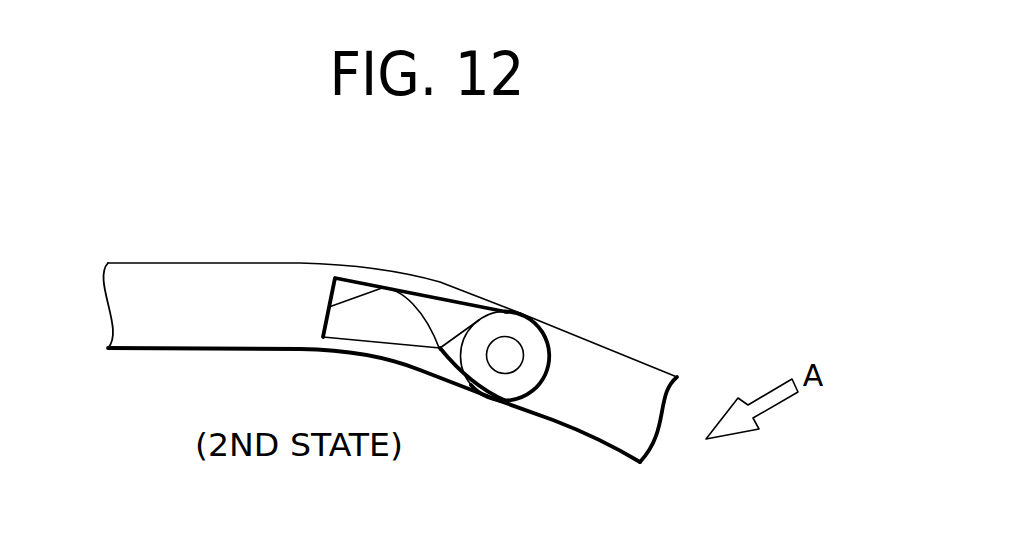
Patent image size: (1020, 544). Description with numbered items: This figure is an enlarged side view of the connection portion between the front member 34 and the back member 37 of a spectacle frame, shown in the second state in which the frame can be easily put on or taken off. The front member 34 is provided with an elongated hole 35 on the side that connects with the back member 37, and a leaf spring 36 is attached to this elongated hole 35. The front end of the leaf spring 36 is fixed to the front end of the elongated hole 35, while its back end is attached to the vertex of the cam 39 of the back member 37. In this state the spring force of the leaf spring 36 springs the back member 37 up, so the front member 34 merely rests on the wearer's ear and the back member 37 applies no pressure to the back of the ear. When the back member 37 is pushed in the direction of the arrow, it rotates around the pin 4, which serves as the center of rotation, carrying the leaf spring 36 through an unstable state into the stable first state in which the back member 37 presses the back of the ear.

The front member 34 is at (205, 280).
The elongated hole 35 is at (450, 313).
The leaf spring 36 is at (350, 295).
The back member 37 is at (630, 377).
The cam 39 is at (532, 330).
The pin 4 is at (512, 356).